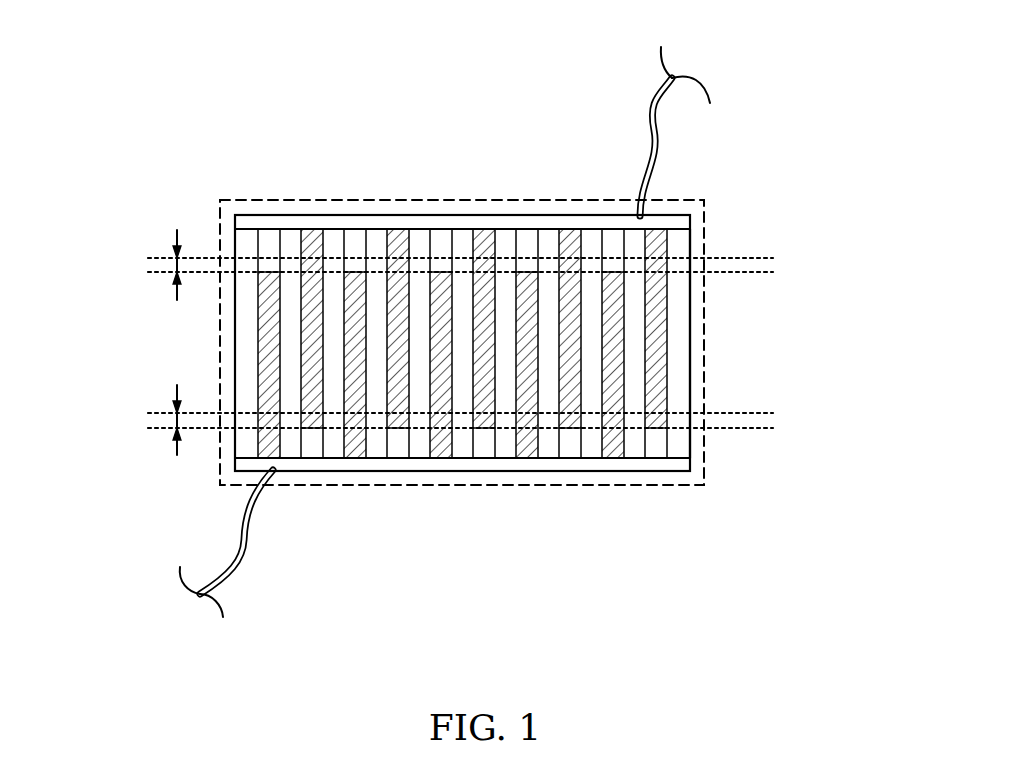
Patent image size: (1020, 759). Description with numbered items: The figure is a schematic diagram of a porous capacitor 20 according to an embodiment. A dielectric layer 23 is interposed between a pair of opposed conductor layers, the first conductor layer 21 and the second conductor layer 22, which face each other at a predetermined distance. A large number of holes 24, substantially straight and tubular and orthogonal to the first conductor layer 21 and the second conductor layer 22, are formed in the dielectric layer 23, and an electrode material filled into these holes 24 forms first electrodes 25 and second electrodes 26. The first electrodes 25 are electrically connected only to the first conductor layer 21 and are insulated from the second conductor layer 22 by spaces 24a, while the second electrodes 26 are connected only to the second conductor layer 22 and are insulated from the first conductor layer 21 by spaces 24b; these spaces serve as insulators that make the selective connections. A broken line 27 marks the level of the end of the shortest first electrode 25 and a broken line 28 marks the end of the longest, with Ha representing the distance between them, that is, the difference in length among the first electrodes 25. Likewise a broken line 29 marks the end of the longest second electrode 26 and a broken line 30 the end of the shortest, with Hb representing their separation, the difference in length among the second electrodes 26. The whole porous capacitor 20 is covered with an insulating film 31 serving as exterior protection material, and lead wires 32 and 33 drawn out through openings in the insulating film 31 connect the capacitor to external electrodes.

The porous capacitor 20 is at (748, 113).
The first conductor layer 21 is at (690, 229).
The second conductor layer 22 is at (700, 478).
The dielectric layer 23 is at (690, 312).
The holes 24 is at (261, 352).
The spaces 24a is at (312, 445).
The spaces 24b is at (273, 242).
The first electrodes 25 is at (310, 280).
The second electrodes 26 is at (265, 278).
The broken line 27 is at (163, 413).
The broken line 28 is at (162, 430).
The broken line 29 is at (163, 258).
The broken line 30 is at (162, 274).
The insulating film 31 is at (705, 367).
The lead wire 32 is at (660, 78).
The lead wire 33 is at (240, 557).
The distance Ha is at (176, 420).
The distance Hb is at (176, 265).